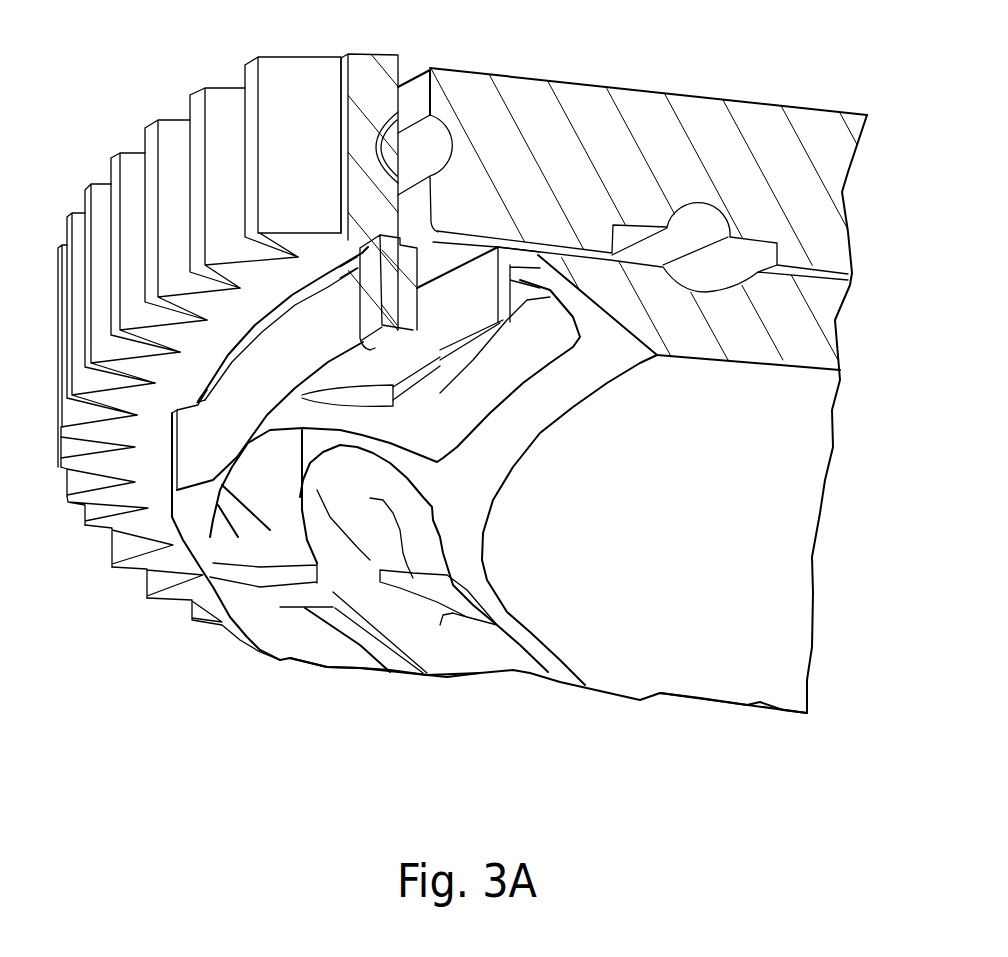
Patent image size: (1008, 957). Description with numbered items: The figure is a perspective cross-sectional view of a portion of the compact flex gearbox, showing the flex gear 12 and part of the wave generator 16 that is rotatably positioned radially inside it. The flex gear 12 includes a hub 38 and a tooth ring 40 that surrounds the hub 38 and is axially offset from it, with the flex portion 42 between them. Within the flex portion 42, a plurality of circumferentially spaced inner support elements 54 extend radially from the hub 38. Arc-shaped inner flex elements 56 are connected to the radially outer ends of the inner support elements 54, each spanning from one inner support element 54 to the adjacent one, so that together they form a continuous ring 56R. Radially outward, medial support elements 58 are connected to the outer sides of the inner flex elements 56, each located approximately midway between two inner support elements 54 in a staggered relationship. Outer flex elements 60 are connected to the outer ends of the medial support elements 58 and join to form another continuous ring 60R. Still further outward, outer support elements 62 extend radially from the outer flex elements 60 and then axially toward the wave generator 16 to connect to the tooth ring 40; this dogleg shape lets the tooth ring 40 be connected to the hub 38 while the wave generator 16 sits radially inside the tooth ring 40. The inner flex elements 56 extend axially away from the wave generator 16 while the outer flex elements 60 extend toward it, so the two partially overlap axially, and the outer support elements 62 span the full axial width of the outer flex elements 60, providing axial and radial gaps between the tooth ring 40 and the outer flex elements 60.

The flex gear 12 is at (822, 622).
The wave generator 16 is at (622, 80).
The hub 38 is at (750, 677).
The tooth ring 40 is at (367, 91).
The flex portion 42 is at (257, 760).
The inner support element 54 is at (400, 463).
The inner flex element 56 is at (488, 727).
The continuous ring 56R is at (432, 690).
The medial support element 58 is at (347, 632).
The outer flex element 60 is at (283, 692).
The continuous ring 60R is at (322, 684).
The outer support element 62 is at (368, 313).